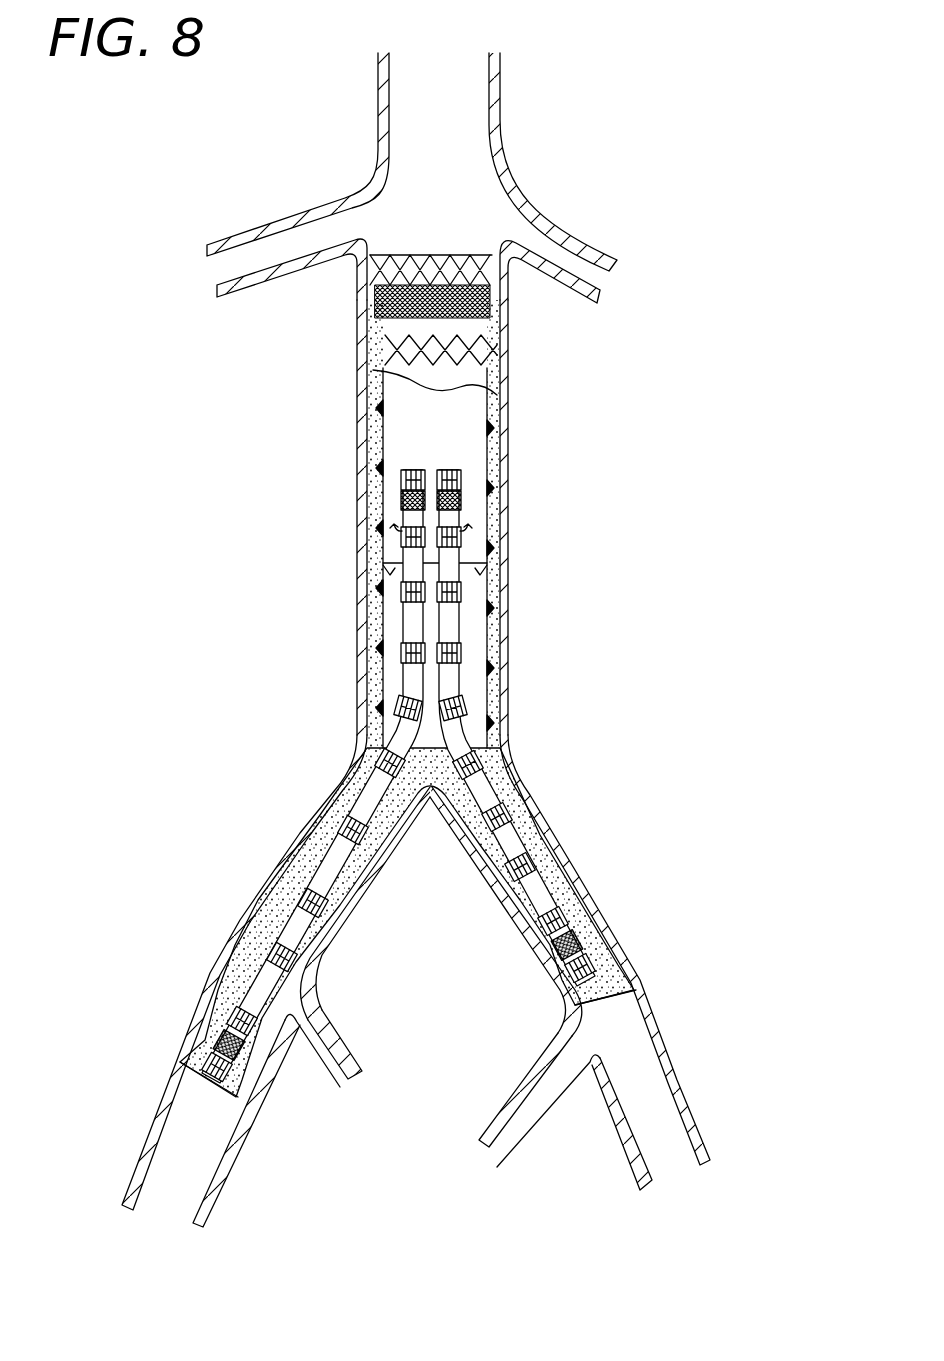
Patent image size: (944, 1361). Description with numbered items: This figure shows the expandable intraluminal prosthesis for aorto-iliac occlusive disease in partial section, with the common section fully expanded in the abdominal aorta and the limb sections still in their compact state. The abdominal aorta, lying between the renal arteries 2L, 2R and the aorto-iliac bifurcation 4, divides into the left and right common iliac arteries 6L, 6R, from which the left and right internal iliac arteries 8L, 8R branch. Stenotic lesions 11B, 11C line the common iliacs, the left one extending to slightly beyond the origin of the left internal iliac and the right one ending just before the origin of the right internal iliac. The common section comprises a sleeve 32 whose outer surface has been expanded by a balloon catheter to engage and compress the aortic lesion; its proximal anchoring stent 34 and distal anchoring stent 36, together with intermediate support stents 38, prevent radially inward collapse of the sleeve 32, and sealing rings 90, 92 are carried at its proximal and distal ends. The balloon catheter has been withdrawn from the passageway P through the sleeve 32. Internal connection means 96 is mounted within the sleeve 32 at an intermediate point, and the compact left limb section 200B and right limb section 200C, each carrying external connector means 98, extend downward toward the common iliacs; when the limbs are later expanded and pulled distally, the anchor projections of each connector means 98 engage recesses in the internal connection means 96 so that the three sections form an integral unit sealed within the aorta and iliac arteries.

The left renal artery 2L is at (270, 253).
The right renal artery 2R is at (587, 243).
The aorto-iliac bifurcation 4 is at (500, 748).
The left common iliac artery 6L is at (172, 1183).
The right common iliac artery 6R is at (670, 1120).
The left internal iliac artery 8L is at (345, 1075).
The right internal iliac artery 8R is at (527, 1110).
The sleeve 32 is at (490, 408).
The anchoring stent 34 is at (440, 267).
The anchoring stent 36 is at (590, 1003).
The intermediate support stent 38 is at (497, 373).
The sealing ring 90 is at (493, 307).
The sealing ring 92 is at (587, 948).
The internal connection means 96 is at (473, 565).
The external connector means 98 is at (395, 535).
The left limb section 200B is at (400, 675).
The right limb section 200C is at (460, 676).
The stenotic lesion 11B is at (267, 922).
The stenotic lesion 11C is at (583, 923).
The passageway P is at (393, 385).